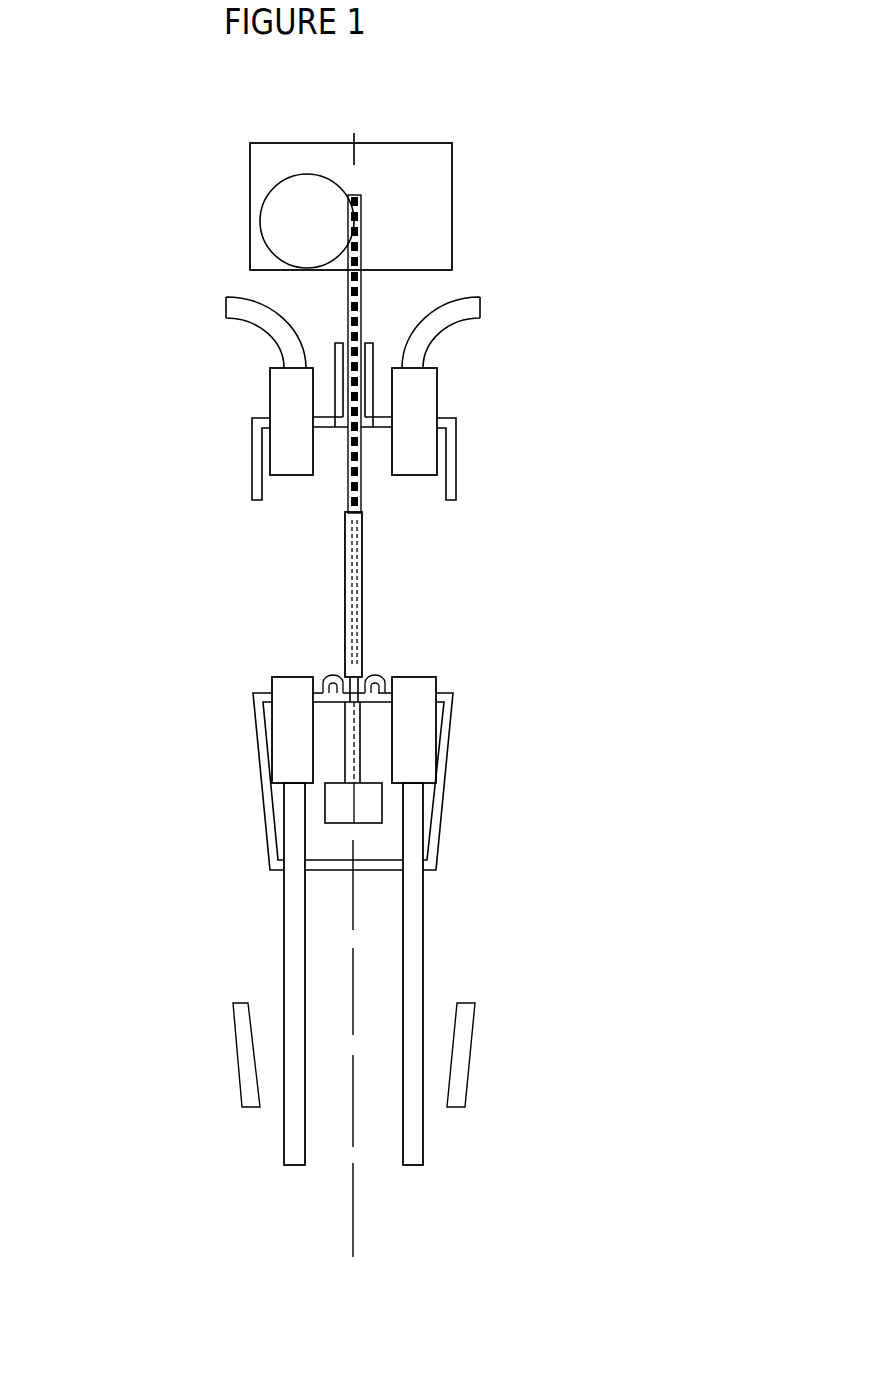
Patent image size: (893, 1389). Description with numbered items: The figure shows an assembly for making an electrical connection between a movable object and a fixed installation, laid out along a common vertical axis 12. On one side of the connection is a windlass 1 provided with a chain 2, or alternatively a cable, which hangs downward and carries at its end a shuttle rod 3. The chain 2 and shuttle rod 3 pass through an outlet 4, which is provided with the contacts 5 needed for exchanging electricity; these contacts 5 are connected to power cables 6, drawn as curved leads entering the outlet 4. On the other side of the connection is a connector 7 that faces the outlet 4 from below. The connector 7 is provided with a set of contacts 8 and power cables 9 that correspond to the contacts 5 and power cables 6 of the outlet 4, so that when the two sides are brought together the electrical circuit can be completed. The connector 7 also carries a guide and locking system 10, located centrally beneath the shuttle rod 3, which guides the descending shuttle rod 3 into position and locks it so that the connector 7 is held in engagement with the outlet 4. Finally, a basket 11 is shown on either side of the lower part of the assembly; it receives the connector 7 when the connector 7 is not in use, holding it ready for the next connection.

The windlass 1 is at (268, 192).
The chain 2 is at (458, 348).
The shuttle rod 3 is at (206, 583).
The outlet 4 is at (233, 432).
The contacts 5 is at (288, 396).
The power cables 6 is at (396, 332).
The connector 7 is at (291, 781).
The set of contacts 8 is at (290, 720).
The power cables 9 is at (278, 974).
The guide and locking system 10 is at (422, 806).
The basket 11 is at (304, 1055).
The centre axis 12 is at (246, 1048).